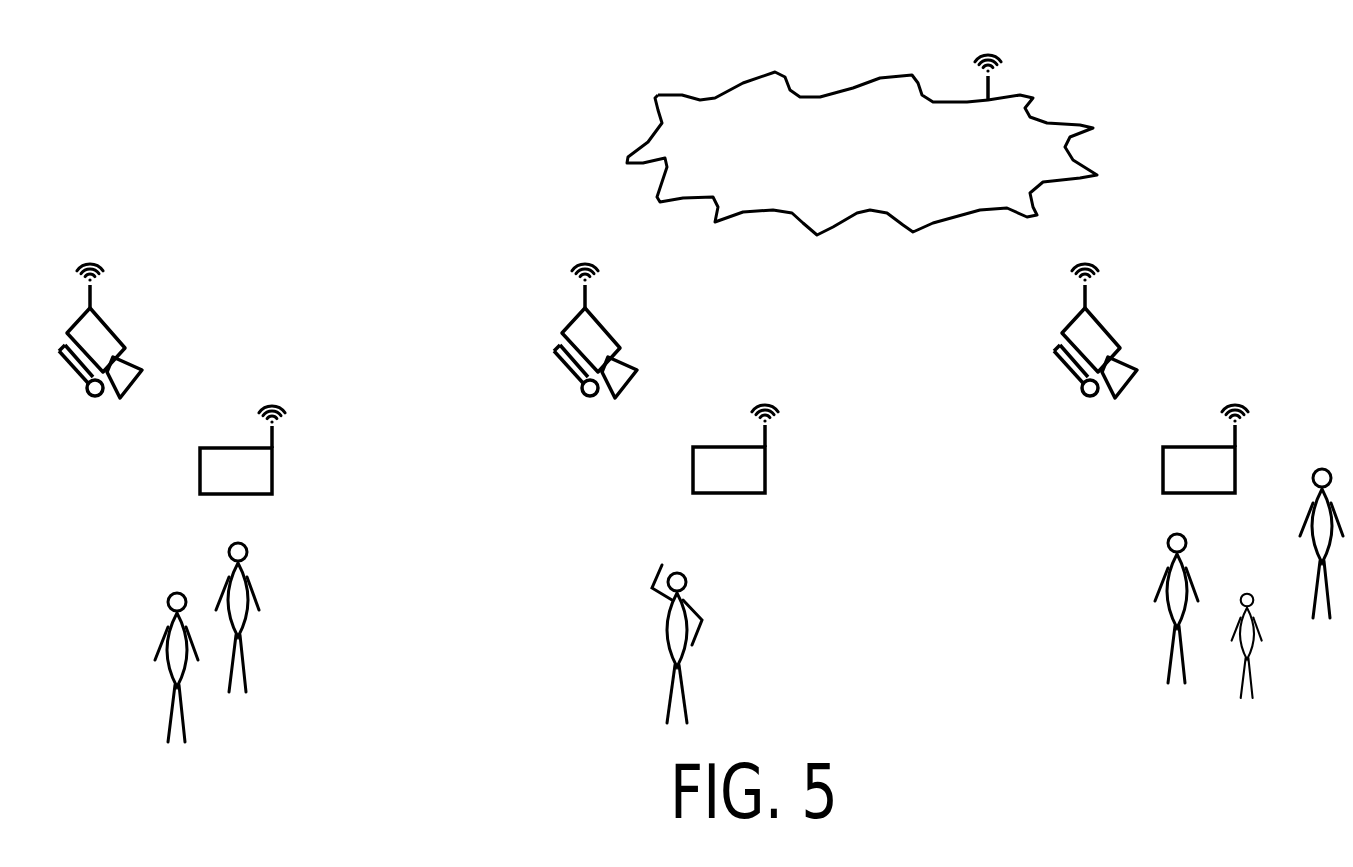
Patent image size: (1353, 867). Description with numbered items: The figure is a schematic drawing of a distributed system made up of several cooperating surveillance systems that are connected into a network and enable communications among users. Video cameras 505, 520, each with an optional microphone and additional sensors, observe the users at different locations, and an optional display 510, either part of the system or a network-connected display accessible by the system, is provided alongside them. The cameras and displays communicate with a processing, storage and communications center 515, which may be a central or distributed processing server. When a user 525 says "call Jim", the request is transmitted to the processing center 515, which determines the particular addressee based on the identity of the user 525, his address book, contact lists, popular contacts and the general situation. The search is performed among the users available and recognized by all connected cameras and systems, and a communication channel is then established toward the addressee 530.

The video camera 505 is at (141, 331).
The display 510 is at (274, 452).
The processing, storage and communications center 515 is at (862, 145).
The video camera 520 is at (1121, 331).
The user 525 is at (713, 645).
The addressee 530 is at (1249, 589).